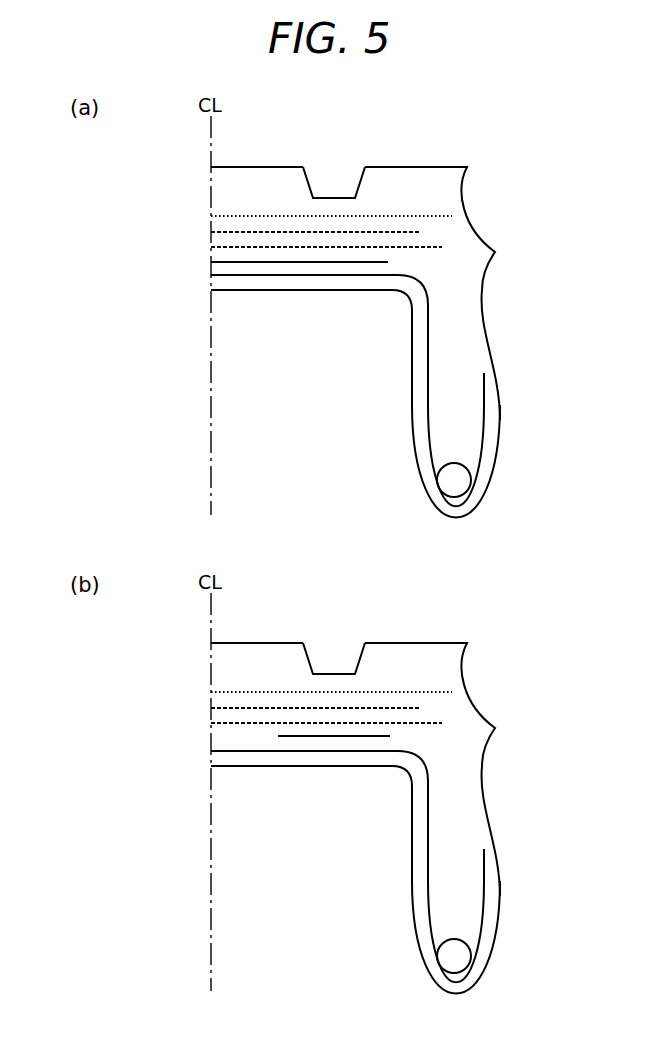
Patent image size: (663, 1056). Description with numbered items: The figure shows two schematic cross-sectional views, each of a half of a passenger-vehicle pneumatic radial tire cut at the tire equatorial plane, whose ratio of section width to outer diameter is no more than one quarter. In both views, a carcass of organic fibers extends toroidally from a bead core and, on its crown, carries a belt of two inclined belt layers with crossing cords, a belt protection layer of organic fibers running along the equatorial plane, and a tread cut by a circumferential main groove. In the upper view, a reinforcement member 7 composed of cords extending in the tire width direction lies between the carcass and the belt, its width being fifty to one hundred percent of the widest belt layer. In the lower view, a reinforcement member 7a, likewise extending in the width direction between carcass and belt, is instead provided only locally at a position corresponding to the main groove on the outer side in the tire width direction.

The reinforcement member 7 is at (212, 262).
The reinforcement member 7a is at (338, 738).